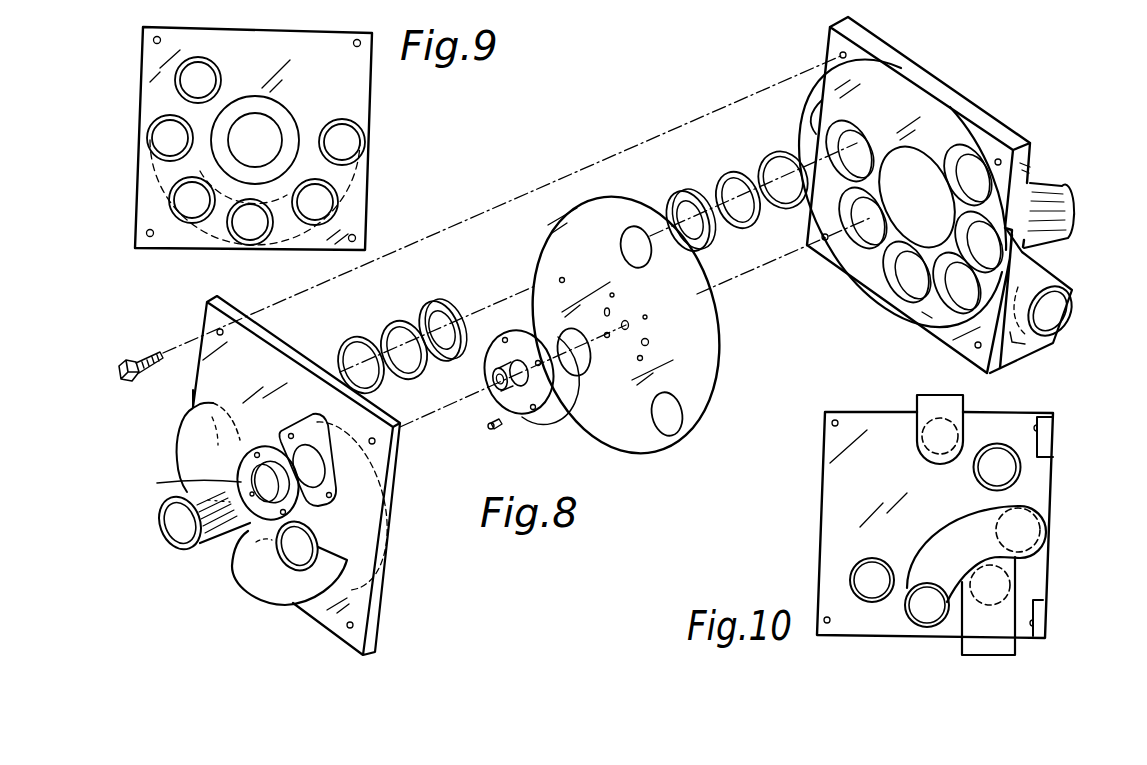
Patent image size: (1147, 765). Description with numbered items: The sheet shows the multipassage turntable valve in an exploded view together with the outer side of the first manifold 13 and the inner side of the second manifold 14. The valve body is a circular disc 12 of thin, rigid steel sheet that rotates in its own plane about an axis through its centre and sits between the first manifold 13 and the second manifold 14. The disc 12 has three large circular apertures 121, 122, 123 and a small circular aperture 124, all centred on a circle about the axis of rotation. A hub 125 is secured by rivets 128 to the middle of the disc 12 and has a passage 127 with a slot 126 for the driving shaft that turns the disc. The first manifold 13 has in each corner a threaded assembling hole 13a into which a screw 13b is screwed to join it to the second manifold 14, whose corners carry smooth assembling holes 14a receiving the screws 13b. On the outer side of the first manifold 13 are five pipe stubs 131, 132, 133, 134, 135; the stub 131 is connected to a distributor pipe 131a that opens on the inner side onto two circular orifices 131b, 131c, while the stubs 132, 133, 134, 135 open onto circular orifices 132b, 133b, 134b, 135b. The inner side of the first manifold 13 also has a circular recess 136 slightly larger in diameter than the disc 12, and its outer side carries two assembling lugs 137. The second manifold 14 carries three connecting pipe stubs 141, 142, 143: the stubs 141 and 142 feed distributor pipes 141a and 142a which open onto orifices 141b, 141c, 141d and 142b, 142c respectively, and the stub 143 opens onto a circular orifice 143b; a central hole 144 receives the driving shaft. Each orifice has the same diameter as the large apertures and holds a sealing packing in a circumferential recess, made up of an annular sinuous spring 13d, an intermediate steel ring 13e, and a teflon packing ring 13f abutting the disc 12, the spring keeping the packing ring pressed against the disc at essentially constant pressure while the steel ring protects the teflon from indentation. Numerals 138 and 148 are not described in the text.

In FIG. 8, the circular disc 12 is at (627, 427).
In FIG. 8, the first manifold 13 is at (860, 40).
In FIG. 8, the threaded assembling hole 13a is at (840, 55).
In FIG. 10, the threaded assembling hole 13a is at (833, 419).
In FIG. 8, the screw 13b is at (134, 356).
In FIG. 8, the annular sinuous spring 13d is at (340, 342).
In FIG. 8, the intermediate steel ring 13e is at (393, 322).
In FIG. 8, the teflon packing ring 13f is at (433, 305).
In FIG. 8, the second manifold 14 is at (204, 322).
In FIG. 9, the smooth assembling hole 14a is at (152, 40).
In FIG. 8, the smooth assembling hole 14a is at (221, 329).
In FIG. 8, the large circular aperture 121 is at (675, 424).
In FIG. 8, the large circular aperture 122 is at (580, 372).
In FIG. 8, the large circular aperture 123 is at (632, 230).
In FIG. 8, the small circular aperture 124 is at (560, 278).
In FIG. 8, the hub 125 is at (548, 395).
In FIG. 8, the slot 126 is at (490, 370).
In FIG. 8, the passage 127 is at (510, 395).
In FIG. 8, the rivets 128 is at (491, 428).
In FIG. 8, the pipe stub 131 is at (1072, 205).
In FIG. 10, the pipe stub 131 is at (927, 623).
In FIG. 10, the distributor pipe 131a is at (983, 512).
In FIG. 8, the circular orifice 131b is at (993, 247).
In FIG. 10, the circular orifice 131b is at (910, 623).
In FIG. 8, the circular orifice 131c is at (903, 278).
In FIG. 10, the circular orifice 131c is at (1020, 536).
In FIG. 10, the pipe stub 132 is at (1021, 461).
In FIG. 8, the circular orifice 132b is at (855, 245).
In FIG. 10, the circular orifice 132b is at (1023, 452).
In FIG. 8, the pipe stub 133 is at (826, 130).
In FIG. 10, the pipe stub 133 is at (966, 404).
In FIG. 8, the circular orifice 133b is at (810, 122).
In FIG. 10, the circular orifice 133b is at (927, 435).
In FIG. 8, the pipe stub 134 is at (1015, 131).
In FIG. 10, the pipe stub 134 is at (862, 603).
In FIG. 8, the circular orifice 134b is at (980, 173).
In FIG. 10, the circular orifice 134b is at (867, 578).
In FIG. 8, the pipe stub 135 is at (1057, 285).
In FIG. 10, the pipe stub 135 is at (1000, 647).
In FIG. 8, the circular orifice 135b is at (965, 281).
In FIG. 8, the circular recess 136 is at (907, 92).
In FIG. 8, the assembling lugs 137 is at (1052, 341).
In FIG. 10, the assembling lugs 137 is at (1038, 618).
In FIG. 8, the port opening 138 is at (912, 300).
In FIG. 10, the port opening 138 is at (857, 563).
In FIG. 8, the connecting pipe stub 141 is at (318, 550).
In FIG. 9, the distributor pipe 141a is at (160, 170).
In FIG. 8, the distributor pipe 141a is at (283, 592).
In FIG. 9, the orifice 141b is at (160, 136).
In FIG. 9, the orifice 141c is at (178, 200).
In FIG. 9, the orifice 141d is at (233, 238).
In FIG. 8, the connecting pipe stub 142 is at (202, 547).
In FIG. 9, the distributor pipe 142a is at (352, 174).
In FIG. 8, the distributor pipe 142a is at (184, 464).
In FIG. 9, the orifice 142b is at (350, 143).
In FIG. 9, the orifice 142c is at (323, 203).
In FIG. 8, the connecting pipe stub 143 is at (338, 470).
In FIG. 9, the circular orifice 143b is at (178, 80).
In FIG. 9, the central hole 144 is at (277, 127).
In FIG. 8, the central hole 144 is at (247, 479).
In FIG. 9, the dashed circle passage 148 is at (160, 206).